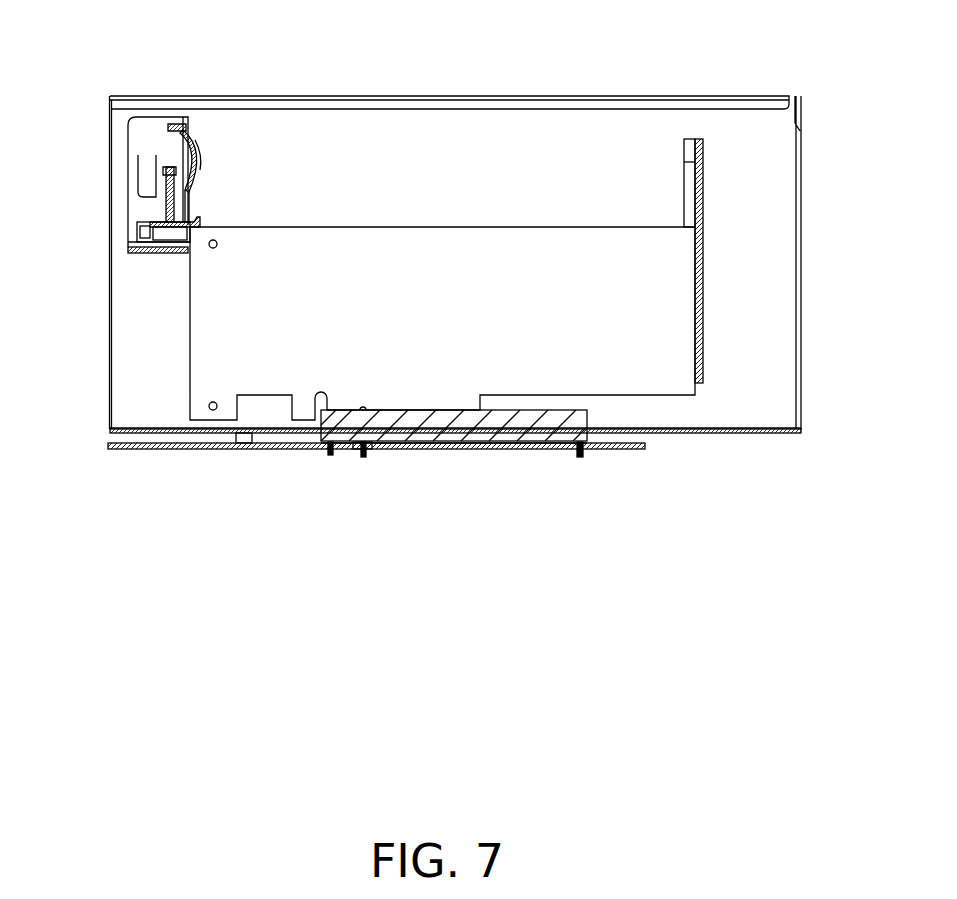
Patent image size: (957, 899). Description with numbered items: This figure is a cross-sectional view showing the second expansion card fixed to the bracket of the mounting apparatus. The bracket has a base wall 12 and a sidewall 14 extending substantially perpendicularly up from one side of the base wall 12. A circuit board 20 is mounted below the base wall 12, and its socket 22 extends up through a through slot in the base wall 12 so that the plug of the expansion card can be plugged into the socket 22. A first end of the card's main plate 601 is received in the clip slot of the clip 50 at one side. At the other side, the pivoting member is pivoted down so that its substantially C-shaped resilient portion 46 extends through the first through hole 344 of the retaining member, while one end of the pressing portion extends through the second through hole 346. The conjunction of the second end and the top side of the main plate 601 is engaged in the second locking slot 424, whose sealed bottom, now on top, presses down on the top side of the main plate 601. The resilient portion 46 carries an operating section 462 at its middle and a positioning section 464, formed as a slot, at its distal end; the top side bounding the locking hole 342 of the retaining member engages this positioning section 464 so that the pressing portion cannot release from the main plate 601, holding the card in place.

The base wall 12 is at (743, 432).
The sidewall 14 is at (778, 279).
The circuit board 20 is at (510, 445).
The socket 22 is at (415, 420).
The clip 50 is at (702, 188).
The main plate 601 is at (545, 265).
The locking hole 342 is at (185, 143).
The first through hole 344 is at (158, 213).
The second through hole 346 is at (163, 243).
The resilient portion 46 is at (202, 178).
The operating section 462 is at (200, 155).
The positioning section 464 is at (172, 130).
The second locking slot 424 is at (200, 222).